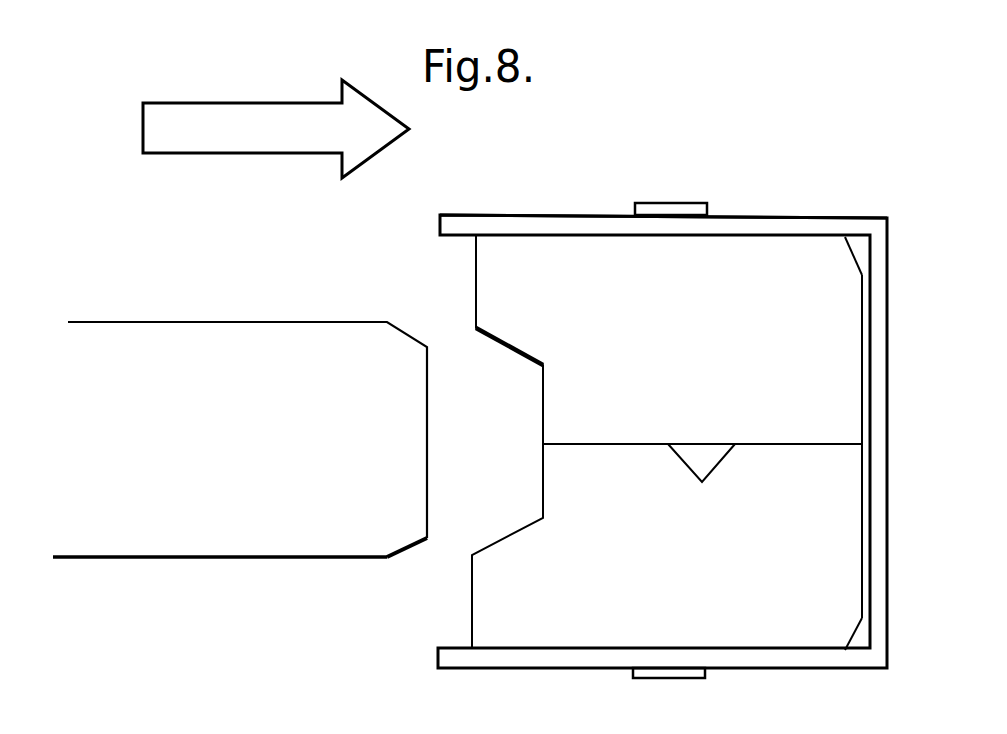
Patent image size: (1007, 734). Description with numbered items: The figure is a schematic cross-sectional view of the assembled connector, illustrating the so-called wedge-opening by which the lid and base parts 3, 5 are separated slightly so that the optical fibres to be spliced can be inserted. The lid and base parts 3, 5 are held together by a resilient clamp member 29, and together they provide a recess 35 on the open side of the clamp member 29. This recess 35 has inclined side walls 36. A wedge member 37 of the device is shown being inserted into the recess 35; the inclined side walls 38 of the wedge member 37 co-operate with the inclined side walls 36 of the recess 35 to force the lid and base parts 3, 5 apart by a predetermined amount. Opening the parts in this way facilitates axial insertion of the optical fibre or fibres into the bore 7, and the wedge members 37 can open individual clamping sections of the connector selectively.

The lid part 3 is at (825, 577).
The base part 5 is at (838, 328).
The bore 7 is at (707, 463).
The resilient clamp member 29 is at (803, 218).
The recess 35 is at (470, 511).
The inclined side walls 36 is at (498, 340).
The wedge members 37 is at (213, 497).
The inclined side walls 38 is at (397, 558).